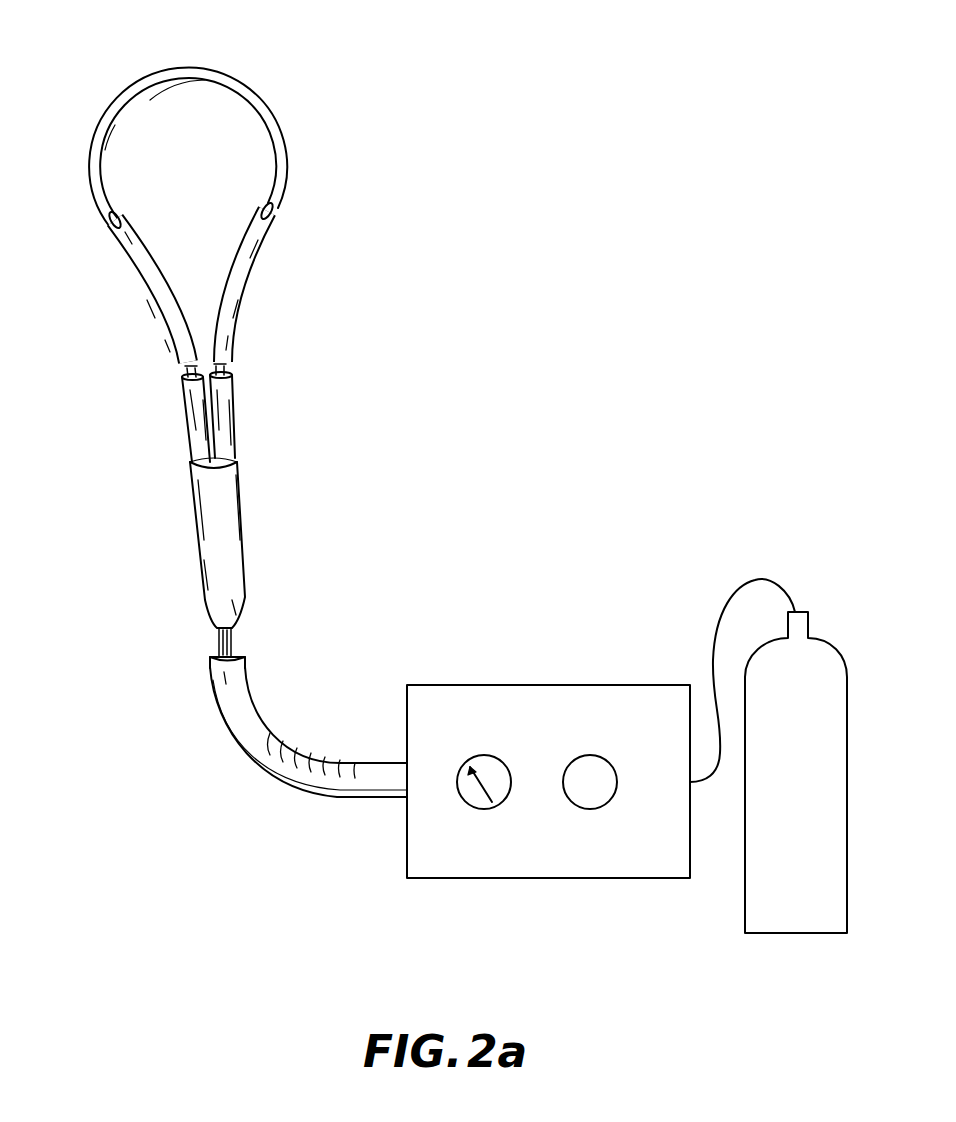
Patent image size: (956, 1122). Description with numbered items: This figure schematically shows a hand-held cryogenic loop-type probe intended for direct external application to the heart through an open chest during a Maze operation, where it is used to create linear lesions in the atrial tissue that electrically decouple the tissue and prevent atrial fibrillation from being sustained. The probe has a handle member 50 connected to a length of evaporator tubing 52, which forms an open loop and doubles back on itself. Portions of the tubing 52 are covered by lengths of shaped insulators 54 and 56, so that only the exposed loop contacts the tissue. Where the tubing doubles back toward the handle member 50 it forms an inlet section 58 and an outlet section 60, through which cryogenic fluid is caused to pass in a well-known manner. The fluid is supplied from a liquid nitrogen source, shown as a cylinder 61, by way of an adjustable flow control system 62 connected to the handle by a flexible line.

The handle member 50 is at (245, 538).
The evaporator tubing 52 is at (250, 90).
The shaped insulator 54 is at (120, 242).
The shaped insulator 56 is at (263, 244).
The inlet section 58 is at (185, 373).
The outlet section 60 is at (228, 373).
The liquid nitrogen cylinder 61 is at (847, 677).
The adjustable flow control system 62 is at (465, 685).